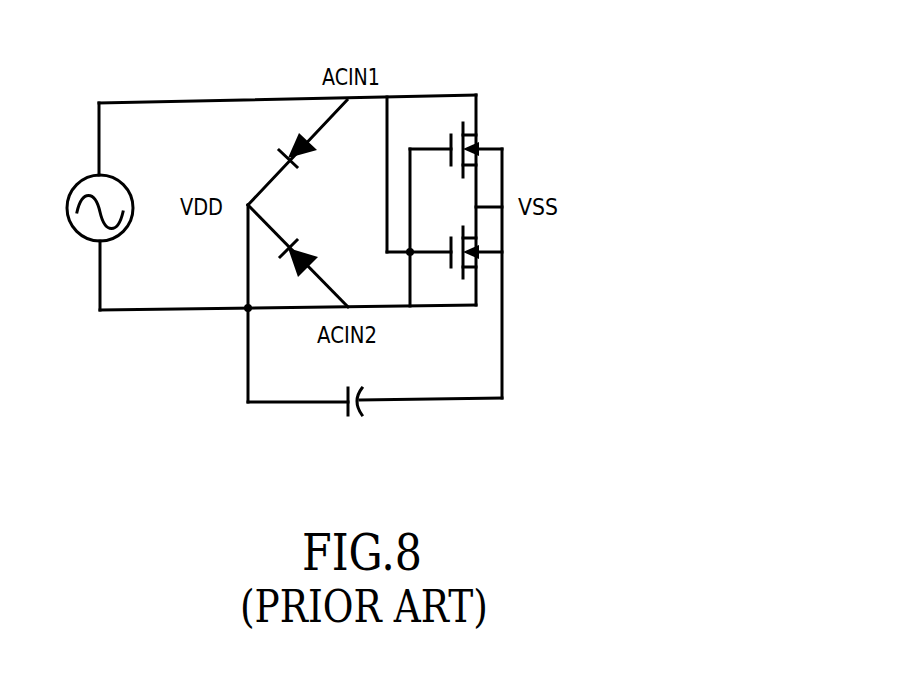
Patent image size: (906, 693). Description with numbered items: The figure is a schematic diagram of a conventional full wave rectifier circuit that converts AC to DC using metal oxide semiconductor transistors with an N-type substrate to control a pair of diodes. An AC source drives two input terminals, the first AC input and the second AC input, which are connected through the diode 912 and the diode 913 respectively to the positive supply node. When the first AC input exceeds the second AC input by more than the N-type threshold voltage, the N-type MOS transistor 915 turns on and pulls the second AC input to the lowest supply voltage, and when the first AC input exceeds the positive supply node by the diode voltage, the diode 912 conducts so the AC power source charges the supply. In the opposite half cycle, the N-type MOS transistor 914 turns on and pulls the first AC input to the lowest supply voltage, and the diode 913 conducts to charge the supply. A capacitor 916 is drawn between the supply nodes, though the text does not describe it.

The diode 912 is at (290, 141).
The diode 913 is at (313, 243).
The N-type MOS transistor 914 is at (502, 136).
The N-type MOS transistor 915 is at (513, 264).
The capacitor 916 is at (353, 422).